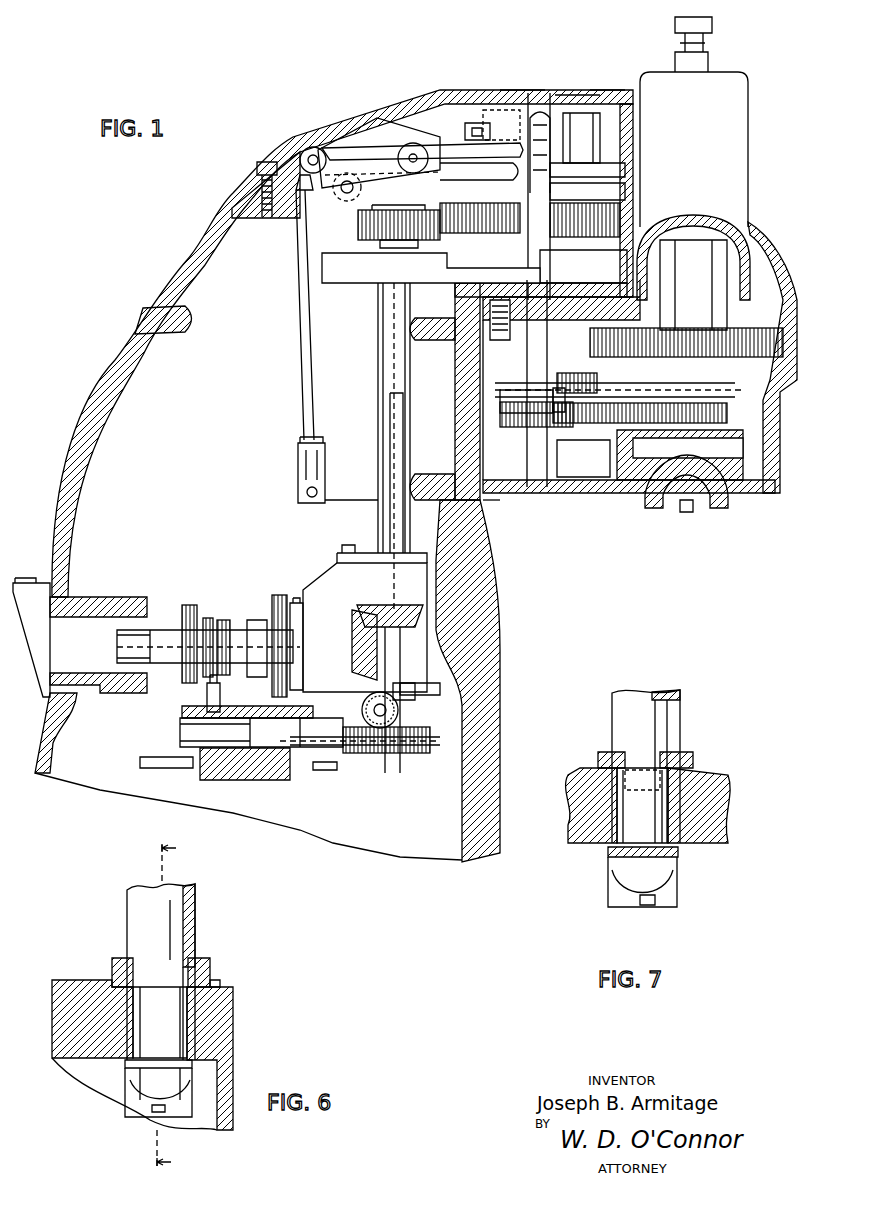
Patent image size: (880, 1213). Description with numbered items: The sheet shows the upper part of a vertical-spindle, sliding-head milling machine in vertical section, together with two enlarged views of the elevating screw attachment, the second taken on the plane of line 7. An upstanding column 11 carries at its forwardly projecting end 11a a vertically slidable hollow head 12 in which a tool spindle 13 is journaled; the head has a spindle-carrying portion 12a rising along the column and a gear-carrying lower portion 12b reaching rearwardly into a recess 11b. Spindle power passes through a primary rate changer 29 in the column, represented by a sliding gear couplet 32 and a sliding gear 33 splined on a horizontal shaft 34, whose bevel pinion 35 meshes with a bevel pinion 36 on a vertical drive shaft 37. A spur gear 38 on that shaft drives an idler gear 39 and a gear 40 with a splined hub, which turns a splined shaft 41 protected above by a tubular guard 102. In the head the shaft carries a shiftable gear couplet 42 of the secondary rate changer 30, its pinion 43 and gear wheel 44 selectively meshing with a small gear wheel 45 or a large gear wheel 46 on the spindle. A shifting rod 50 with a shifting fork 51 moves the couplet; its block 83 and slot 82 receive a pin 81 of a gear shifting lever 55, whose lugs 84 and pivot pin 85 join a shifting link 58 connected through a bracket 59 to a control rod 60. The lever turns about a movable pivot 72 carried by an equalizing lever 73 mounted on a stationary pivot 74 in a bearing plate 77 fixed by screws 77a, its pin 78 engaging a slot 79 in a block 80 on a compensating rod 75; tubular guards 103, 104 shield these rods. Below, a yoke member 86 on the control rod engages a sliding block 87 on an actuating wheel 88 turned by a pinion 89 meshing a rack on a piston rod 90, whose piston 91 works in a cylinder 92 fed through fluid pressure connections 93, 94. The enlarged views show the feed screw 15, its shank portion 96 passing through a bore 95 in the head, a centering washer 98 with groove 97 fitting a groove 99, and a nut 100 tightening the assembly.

In FIG. 6, the section line 7— 7 is at (173, 1006).
In FIG. 1, the column 11 is at (120, 345).
In FIG. 1, the forwardly projecting upper end of the column 11a is at (578, 285).
In FIG. 1, the recess 11b is at (493, 500).
In FIG. 1, the sliding head 12 is at (780, 432).
In FIG. 1, the spindle-carrying portion 12a is at (735, 152).
In FIG. 1, the gear-carrying lower portion 12b is at (570, 490).
In FIG. 6, the gear-carrying lower portion 12b is at (68, 1035).
In FIG. 7, the gear-carrying lower portion 12b is at (715, 825).
In FIG. 1, the tool spindle 13 is at (714, 506).
In FIG. 6, the feed screw 15 is at (176, 930).
In FIG. 7, the feed screw 15 is at (665, 720).
In FIG. 1, the primary rate changer 29 is at (238, 600).
In FIG. 1, the secondary rate changer 30 is at (620, 378).
In FIG. 1, the sliding gear couplet 32 is at (215, 620).
In FIG. 1, the sliding gear 33 is at (272, 610).
In FIG. 1, the horizontal shaft 34 is at (182, 625).
In FIG. 1, the bevel pinion 35 is at (355, 672).
In FIG. 1, the bevel pinion 36 is at (374, 610).
In FIG. 1, the drive shaft 37 is at (390, 360).
In FIG. 1, the spur gear 38 is at (365, 235).
In FIG. 1, the idler gear 39 is at (431, 268).
In FIG. 1, the gear 40 is at (625, 215).
In FIG. 1, the splined shaft 41 is at (580, 378).
In FIG. 1, the shiftable gear couplet 42 is at (552, 388).
In FIG. 1, the pinion 43 is at (550, 372).
In FIG. 1, the gear wheel 44 is at (622, 420).
In FIG. 1, the gear wheel 45 is at (672, 408).
In FIG. 1, the gear wheel 46 is at (683, 345).
In FIG. 1, the shifting rod 50 is at (535, 360).
In FIG. 1, the shifting fork 51 is at (583, 458).
In FIG. 1, the gear shifting lever 55 is at (500, 166).
In FIG. 1, the shifting link 58 is at (298, 260).
In FIG. 1, the bracket 59 is at (350, 483).
In FIG. 1, the control rod 60 is at (425, 635).
In FIG. 1, the movable pivot 72 is at (397, 158).
In FIG. 1, the equalizing lever 73 is at (363, 132).
In FIG. 1, the stationary pivot 74 is at (342, 192).
In FIG. 1, the compensating rod 75 is at (520, 92).
In FIG. 1, the bearing plate 77 is at (628, 190).
In FIG. 1, the screws 77a is at (625, 162).
In FIG. 1, the pin 78 is at (510, 125).
In FIG. 1, the slot 79 is at (478, 125).
In FIG. 1, the block 80 is at (478, 112).
In FIG. 1, the pin 81 is at (510, 152).
In FIG. 1, the slot 82 is at (522, 196).
In FIG. 1, the block 83 is at (550, 172).
In FIG. 1, the lugs 84 is at (312, 146).
In FIG. 1, the pivot pin 85 is at (302, 152).
In FIG. 1, the yoke member 86 is at (405, 683).
In FIG. 1, the sliding block 87 is at (362, 700).
In FIG. 1, the actuating wheel 88 is at (425, 715).
In FIG. 1, the pinion 89 is at (405, 722).
In FIG. 1, the piston rod 90 is at (430, 737).
In FIG. 1, the piston 91 is at (262, 728).
In FIG. 1, the cylinder 92 is at (280, 755).
In FIG. 1, the fluid pressure connection 93 is at (207, 688).
In FIG. 1, the fluid pressure connection 94 is at (330, 770).
In FIG. 6, the bore 95 is at (140, 1048).
In FIG. 7, the bore 95 is at (615, 788).
In FIG. 6, the shank portion 96 is at (170, 1030).
In FIG. 7, the shank portion 96 is at (630, 812).
In FIG. 6, the groove 97 is at (133, 962).
In FIG. 7, the groove 97 is at (605, 752).
In FIG. 6, the centering washer 98 is at (205, 958).
In FIG. 7, the centering washer 98 is at (693, 760).
In FIG. 6, the groove 99 is at (222, 984).
In FIG. 7, the groove 99 is at (634, 772).
In FIG. 6, the nut 100 is at (130, 1085).
In FIG. 7, the nut 100 is at (615, 880).
In FIG. 1, the tubular guard 102 is at (620, 140).
In FIG. 1, the tubular guard 103 is at (600, 96).
In FIG. 1, the tubular guard 104 is at (560, 97).